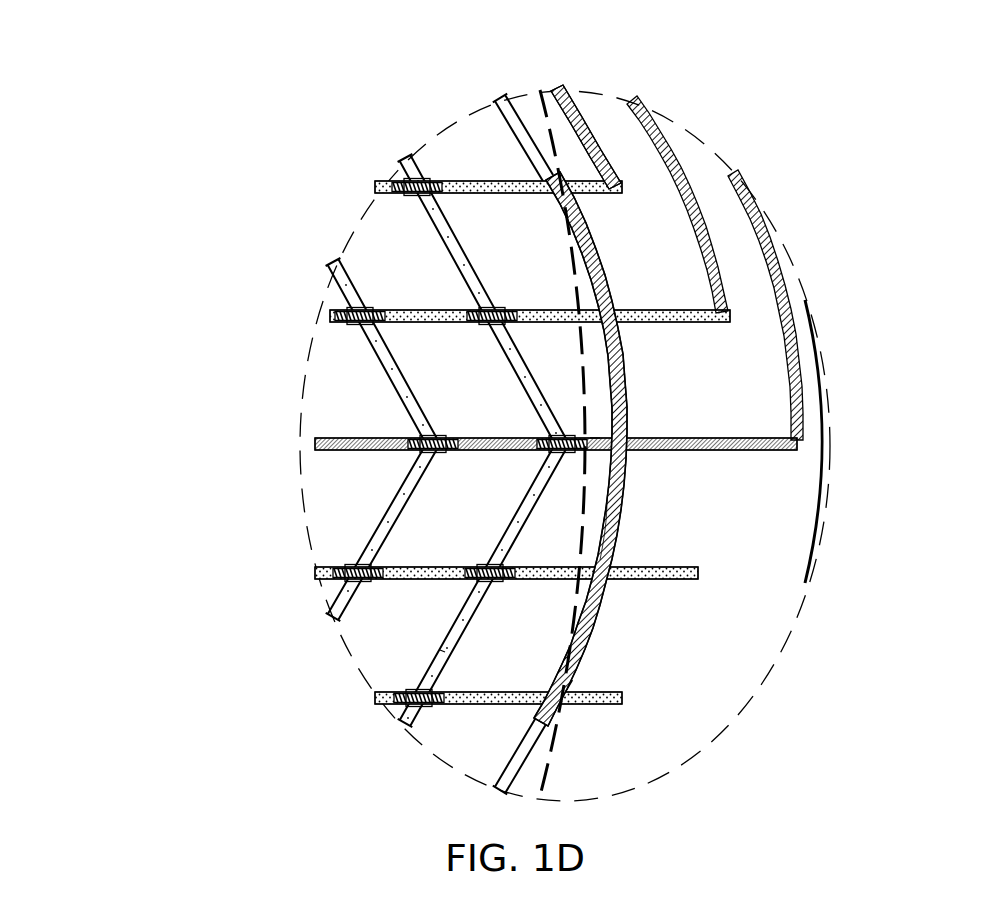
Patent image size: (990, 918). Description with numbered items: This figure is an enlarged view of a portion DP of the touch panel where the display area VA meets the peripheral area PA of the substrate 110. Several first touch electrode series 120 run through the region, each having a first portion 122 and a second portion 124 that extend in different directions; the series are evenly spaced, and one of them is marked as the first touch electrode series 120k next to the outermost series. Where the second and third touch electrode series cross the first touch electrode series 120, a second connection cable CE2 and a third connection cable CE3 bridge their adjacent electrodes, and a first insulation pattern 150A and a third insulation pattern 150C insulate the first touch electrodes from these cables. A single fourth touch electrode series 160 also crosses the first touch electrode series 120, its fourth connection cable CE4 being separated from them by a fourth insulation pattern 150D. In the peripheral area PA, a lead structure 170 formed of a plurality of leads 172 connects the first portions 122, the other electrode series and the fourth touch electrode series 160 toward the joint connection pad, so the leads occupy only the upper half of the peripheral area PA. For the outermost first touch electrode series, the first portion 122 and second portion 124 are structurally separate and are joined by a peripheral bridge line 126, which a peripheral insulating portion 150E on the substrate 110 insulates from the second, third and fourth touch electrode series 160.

The portion DP is at (58, 67).
The display area VA is at (466, 138).
The peripheral area PA is at (603, 117).
The lead 172 is at (677, 158).
The lead structure 170 is at (895, 152).
The second connection cable CE2 is at (345, 311).
The first insulation pattern 150A is at (333, 328).
The fourth touch electrode series 160 is at (485, 438).
The first touch electrode series 120 is at (195, 385).
The first portion 122 is at (397, 378).
The second portion 124 is at (409, 485).
The substrate 110 is at (807, 375).
The fourth connection cable CE4 is at (578, 412).
The fourth insulation pattern 150D is at (585, 450).
The peripheral insulating portion 150E is at (628, 510).
The peripheral bridge line 126 is at (620, 540).
The third connection cable CE3 is at (345, 566).
The first touch electrode series 120k is at (443, 650).
The third insulation pattern 150C is at (410, 692).